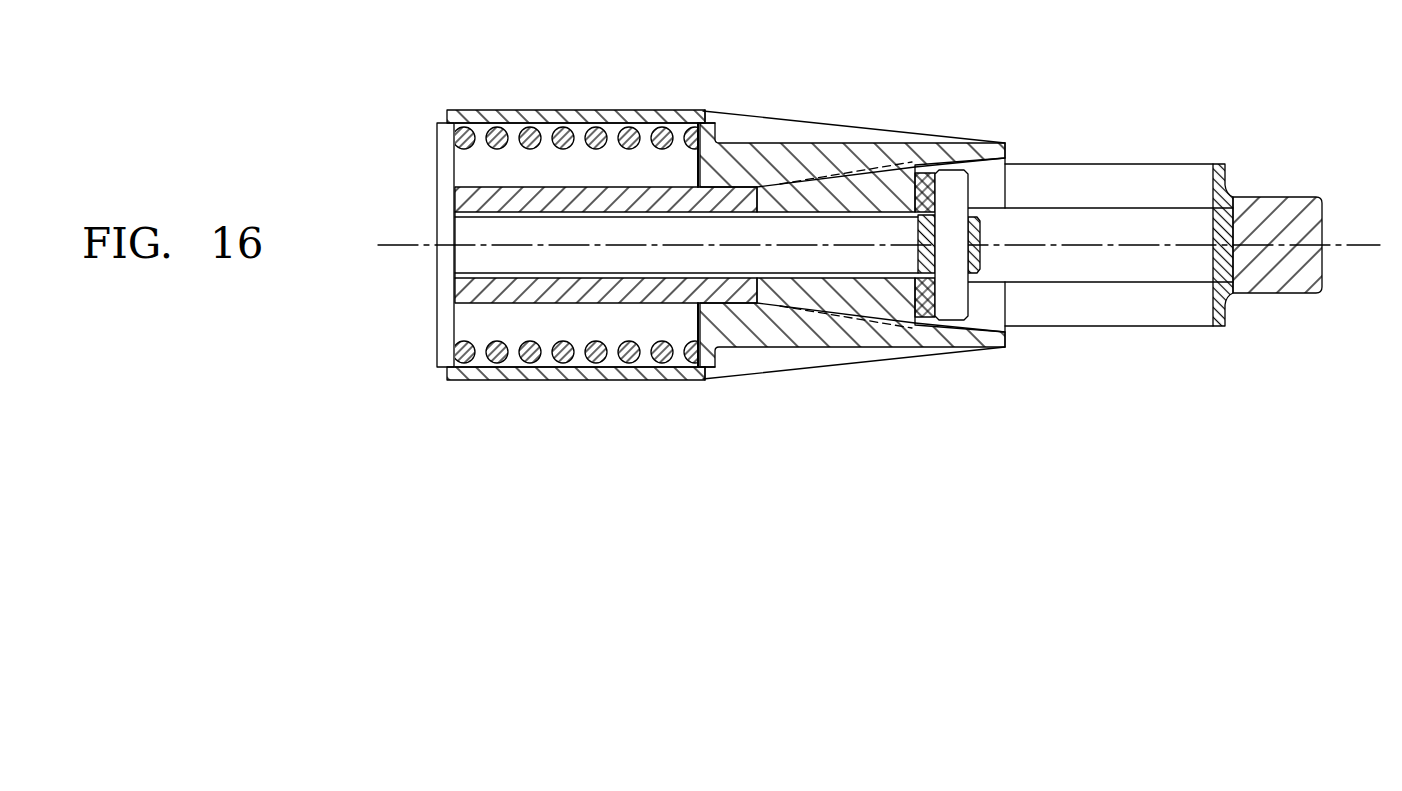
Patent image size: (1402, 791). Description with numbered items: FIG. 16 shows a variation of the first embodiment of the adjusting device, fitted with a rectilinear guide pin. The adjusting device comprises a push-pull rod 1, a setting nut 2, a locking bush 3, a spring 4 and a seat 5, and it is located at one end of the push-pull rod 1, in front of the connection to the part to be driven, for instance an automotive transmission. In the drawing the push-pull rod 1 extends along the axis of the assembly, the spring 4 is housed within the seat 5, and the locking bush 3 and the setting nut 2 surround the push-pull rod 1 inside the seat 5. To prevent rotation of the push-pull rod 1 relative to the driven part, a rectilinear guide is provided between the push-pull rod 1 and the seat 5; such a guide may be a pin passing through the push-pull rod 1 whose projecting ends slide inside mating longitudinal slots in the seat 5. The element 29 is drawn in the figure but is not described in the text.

The inner cable 1 is at (472, 258).
The tapered sleeve 2 is at (822, 190).
The collet body 3 is at (743, 158).
The coil spring 4 is at (497, 132).
The tube / output rod 5 is at (462, 202).
The nut 29 is at (950, 290).